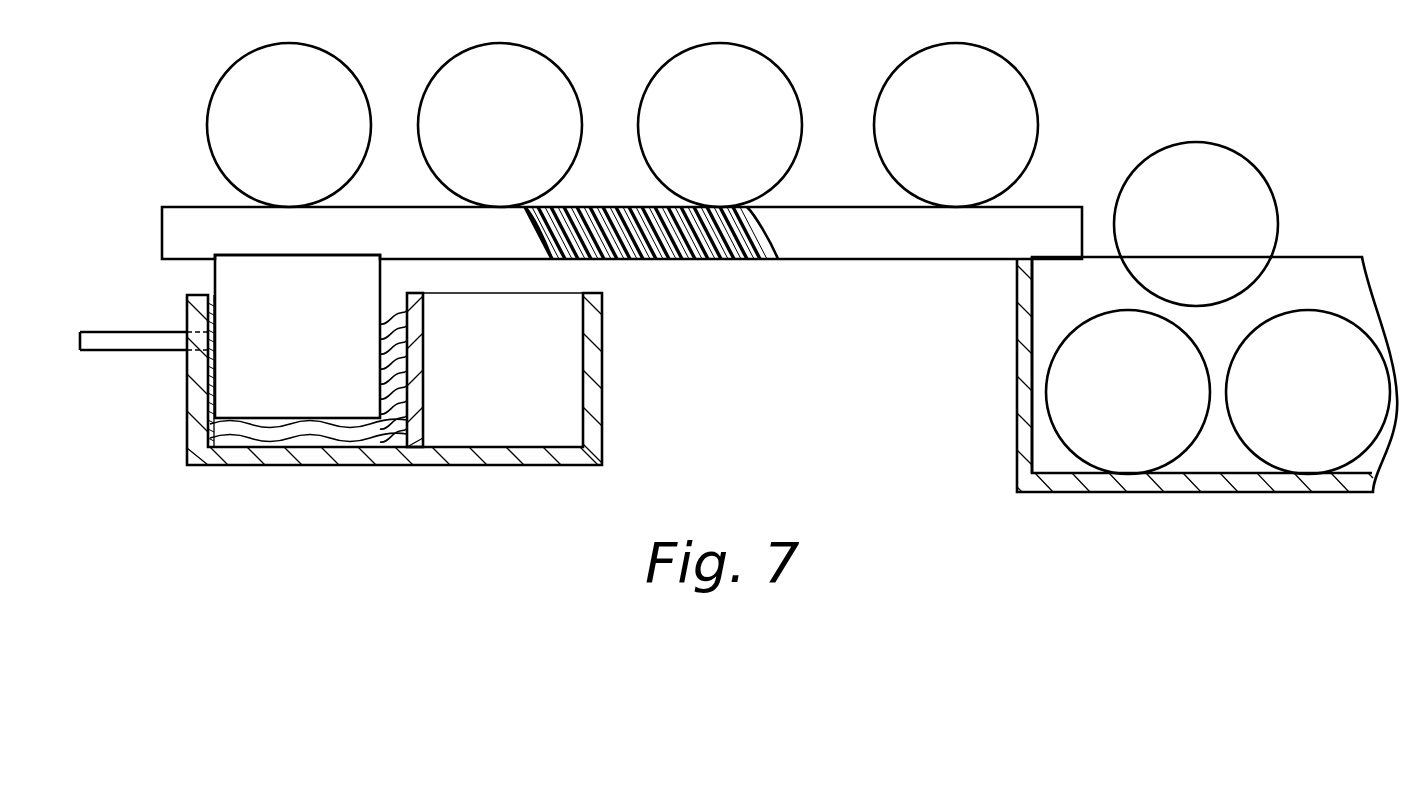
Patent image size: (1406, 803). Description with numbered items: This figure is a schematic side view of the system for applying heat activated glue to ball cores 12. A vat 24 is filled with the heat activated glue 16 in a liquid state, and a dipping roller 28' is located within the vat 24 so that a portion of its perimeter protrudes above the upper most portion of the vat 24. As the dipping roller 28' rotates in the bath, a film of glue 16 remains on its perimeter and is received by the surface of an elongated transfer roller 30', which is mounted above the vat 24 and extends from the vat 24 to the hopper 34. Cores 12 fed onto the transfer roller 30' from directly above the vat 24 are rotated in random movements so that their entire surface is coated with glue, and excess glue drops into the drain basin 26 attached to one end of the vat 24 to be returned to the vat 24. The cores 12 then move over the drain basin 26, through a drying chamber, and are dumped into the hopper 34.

The core 12 is at (331, 47).
The glue 16 is at (367, 437).
The vat 24 is at (212, 300).
The drain basin 26 is at (506, 371).
The dipping roller 28' is at (297, 336).
The transfer roller 30' is at (622, 276).
The hopper 34 is at (1017, 388).